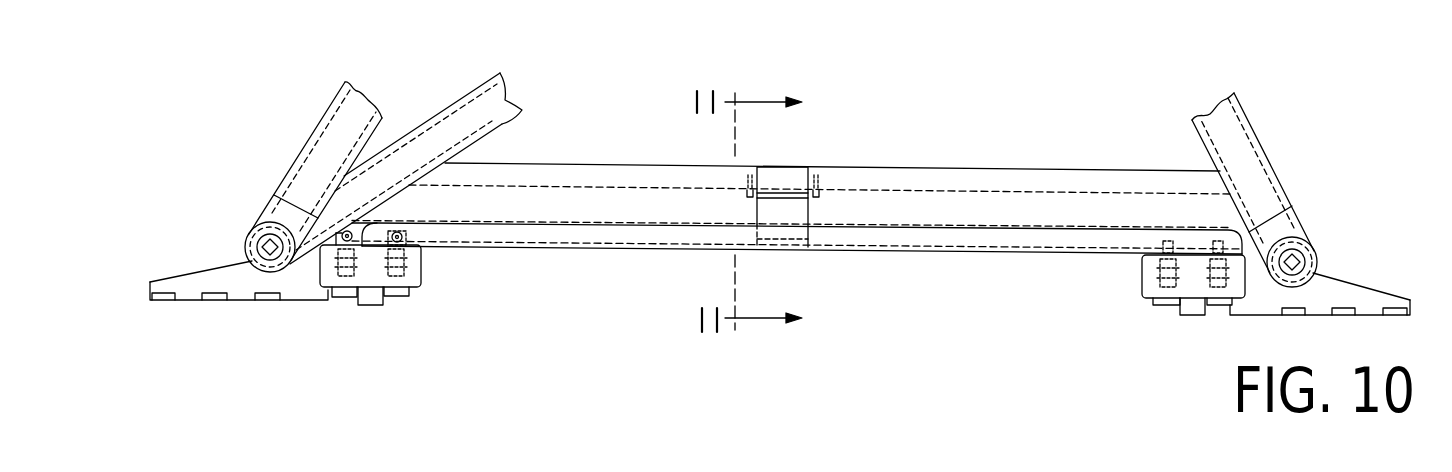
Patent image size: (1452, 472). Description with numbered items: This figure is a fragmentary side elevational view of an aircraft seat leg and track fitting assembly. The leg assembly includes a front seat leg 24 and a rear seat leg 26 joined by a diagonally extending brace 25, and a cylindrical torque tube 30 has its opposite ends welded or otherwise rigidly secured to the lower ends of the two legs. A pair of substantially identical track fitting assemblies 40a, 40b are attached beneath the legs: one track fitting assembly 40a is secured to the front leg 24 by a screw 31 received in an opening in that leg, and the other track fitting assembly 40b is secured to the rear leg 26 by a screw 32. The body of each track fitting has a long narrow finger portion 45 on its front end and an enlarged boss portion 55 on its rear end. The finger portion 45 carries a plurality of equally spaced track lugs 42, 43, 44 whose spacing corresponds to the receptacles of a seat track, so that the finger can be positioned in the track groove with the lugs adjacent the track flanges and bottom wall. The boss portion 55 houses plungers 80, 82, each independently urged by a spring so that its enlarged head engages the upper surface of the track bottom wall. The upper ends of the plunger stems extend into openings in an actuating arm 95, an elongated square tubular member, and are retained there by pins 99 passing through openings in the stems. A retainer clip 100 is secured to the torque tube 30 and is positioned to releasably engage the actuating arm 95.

The front seat leg 24 is at (327, 127).
The diagonally extending brace 25 is at (513, 127).
The rear seat leg 26 is at (1225, 137).
The torque tube 30 is at (987, 183).
The screw 31 is at (262, 243).
The screw 32 is at (1307, 250).
The track fitting assembly 40a is at (205, 308).
The track fitting assembly 40b is at (1423, 243).
The track lug 42 is at (163, 300).
The track lug 43 is at (205, 300).
The track lug 44 is at (262, 300).
The finger portion 45 is at (228, 277).
The boss portion 55 is at (782, 310).
The plunger 80 is at (340, 293).
The plunger 82 is at (393, 293).
The actuating arm 95 is at (987, 238).
The pin 99 is at (410, 232).
The retainer clip 100 is at (797, 212).